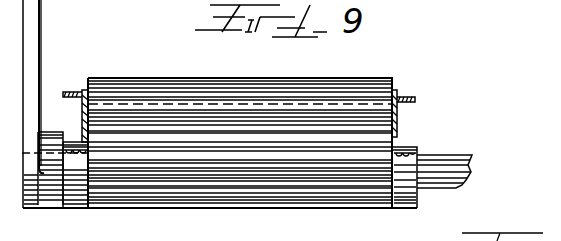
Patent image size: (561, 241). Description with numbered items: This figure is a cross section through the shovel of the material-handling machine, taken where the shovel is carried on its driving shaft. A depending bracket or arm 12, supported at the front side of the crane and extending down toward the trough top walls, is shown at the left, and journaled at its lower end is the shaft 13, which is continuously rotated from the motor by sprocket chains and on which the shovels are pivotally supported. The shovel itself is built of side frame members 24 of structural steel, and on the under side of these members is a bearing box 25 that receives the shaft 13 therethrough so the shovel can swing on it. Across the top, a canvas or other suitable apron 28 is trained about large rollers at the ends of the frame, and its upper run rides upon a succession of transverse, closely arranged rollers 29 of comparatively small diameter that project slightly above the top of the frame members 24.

The depending bracket or arm 12 is at (40, 38).
The shaft 13 is at (448, 165).
The side frame members 24 is at (83, 92).
The bearing box 25 is at (410, 203).
The apron 28 is at (369, 80).
The transverse rollers 29 is at (384, 97).